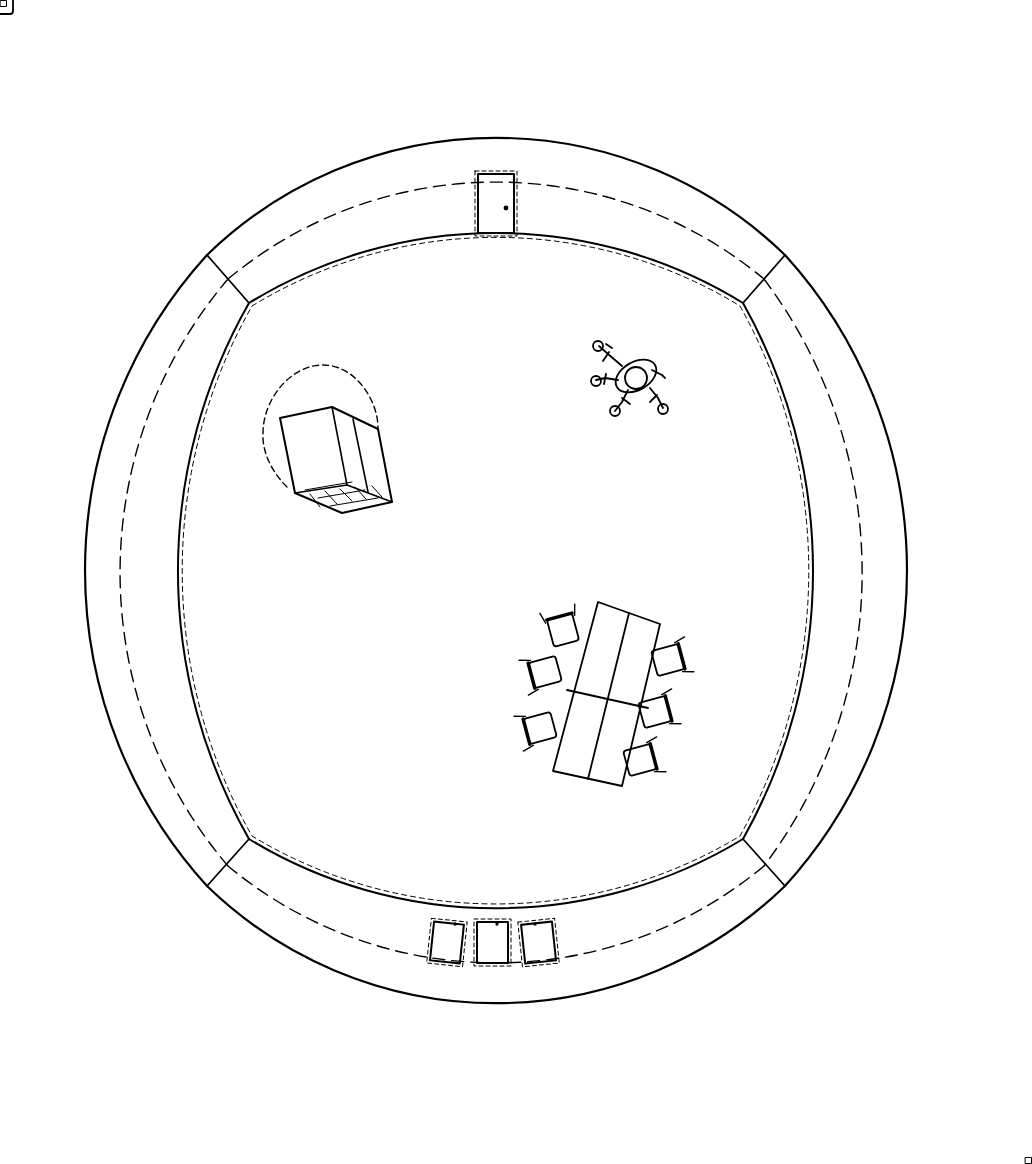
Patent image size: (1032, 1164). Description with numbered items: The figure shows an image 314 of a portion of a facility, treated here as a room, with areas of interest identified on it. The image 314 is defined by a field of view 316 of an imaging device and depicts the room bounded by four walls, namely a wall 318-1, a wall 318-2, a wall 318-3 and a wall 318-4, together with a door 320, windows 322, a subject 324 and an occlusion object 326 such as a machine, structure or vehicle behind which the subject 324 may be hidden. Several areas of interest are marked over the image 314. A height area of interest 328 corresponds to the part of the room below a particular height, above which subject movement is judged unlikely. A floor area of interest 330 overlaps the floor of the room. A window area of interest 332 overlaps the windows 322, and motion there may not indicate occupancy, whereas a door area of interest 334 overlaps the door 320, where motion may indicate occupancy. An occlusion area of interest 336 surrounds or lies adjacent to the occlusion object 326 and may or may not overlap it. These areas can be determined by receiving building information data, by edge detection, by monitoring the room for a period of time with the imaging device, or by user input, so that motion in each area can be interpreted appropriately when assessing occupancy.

The image 314 is at (665, 63).
The field of view 316 is at (683, 182).
The wall 318-1 is at (713, 222).
The wall 318-2 is at (826, 800).
The wall 318-3 is at (750, 905).
The wall 318-4 is at (165, 808).
The door 320 is at (497, 187).
The windows 322 is at (538, 955).
The subject 324 is at (663, 378).
The occlusion object 326 is at (307, 436).
The height area of interest 328 is at (315, 220).
The floor area of interest 330 is at (233, 323).
The window area of interest 332 is at (535, 920).
The door area of interest 334 is at (515, 173).
The occlusion area of interest 336 is at (268, 405).